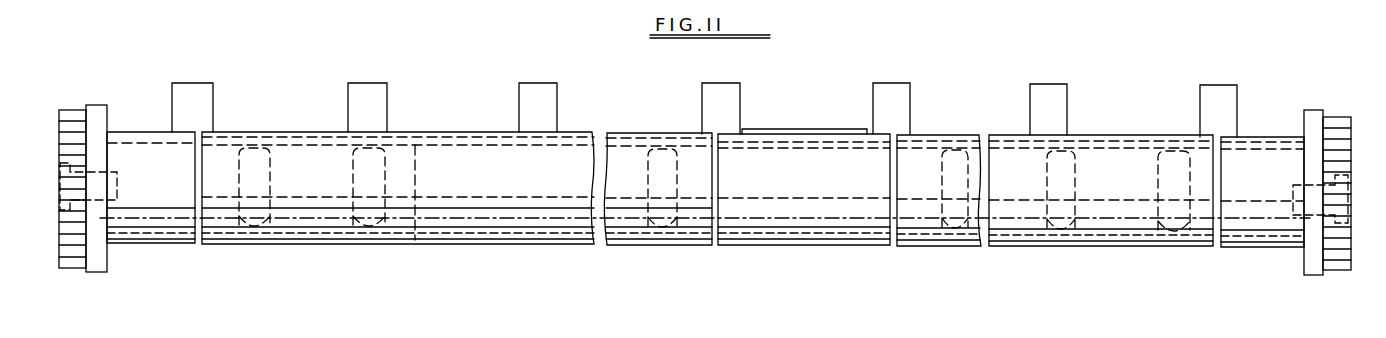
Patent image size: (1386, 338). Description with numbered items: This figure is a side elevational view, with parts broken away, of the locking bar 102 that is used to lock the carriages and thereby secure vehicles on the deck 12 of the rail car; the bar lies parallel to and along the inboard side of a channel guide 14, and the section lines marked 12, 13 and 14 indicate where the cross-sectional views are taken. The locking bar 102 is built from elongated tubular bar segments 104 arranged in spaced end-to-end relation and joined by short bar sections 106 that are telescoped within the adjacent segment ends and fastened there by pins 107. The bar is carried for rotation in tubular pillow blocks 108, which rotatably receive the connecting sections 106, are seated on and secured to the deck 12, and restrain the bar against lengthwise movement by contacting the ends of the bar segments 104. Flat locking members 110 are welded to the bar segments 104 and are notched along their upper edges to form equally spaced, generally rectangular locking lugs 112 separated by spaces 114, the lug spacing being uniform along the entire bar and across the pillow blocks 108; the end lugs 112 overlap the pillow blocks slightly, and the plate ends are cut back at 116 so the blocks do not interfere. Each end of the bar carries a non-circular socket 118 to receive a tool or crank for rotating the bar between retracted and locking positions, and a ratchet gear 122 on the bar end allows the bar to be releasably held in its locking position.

The deck 12 is at (583, 307).
The section line 13- 13 is at (807, 335).
The channel guide 14 is at (90, 305).
The locking bar 102 is at (705, 188).
The tubular bar segment 104 is at (333, 245).
The bar section 106 is at (133, 152).
The pin 107 is at (285, 160).
The pillow block 108 is at (152, 246).
The locking member 110 is at (494, 186).
The locking lug 112 is at (213, 84).
The space 114 is at (475, 133).
The cut back 116 is at (172, 142).
The non-circular socket 118 is at (119, 190).
The ratchet gear 122 is at (72, 110).